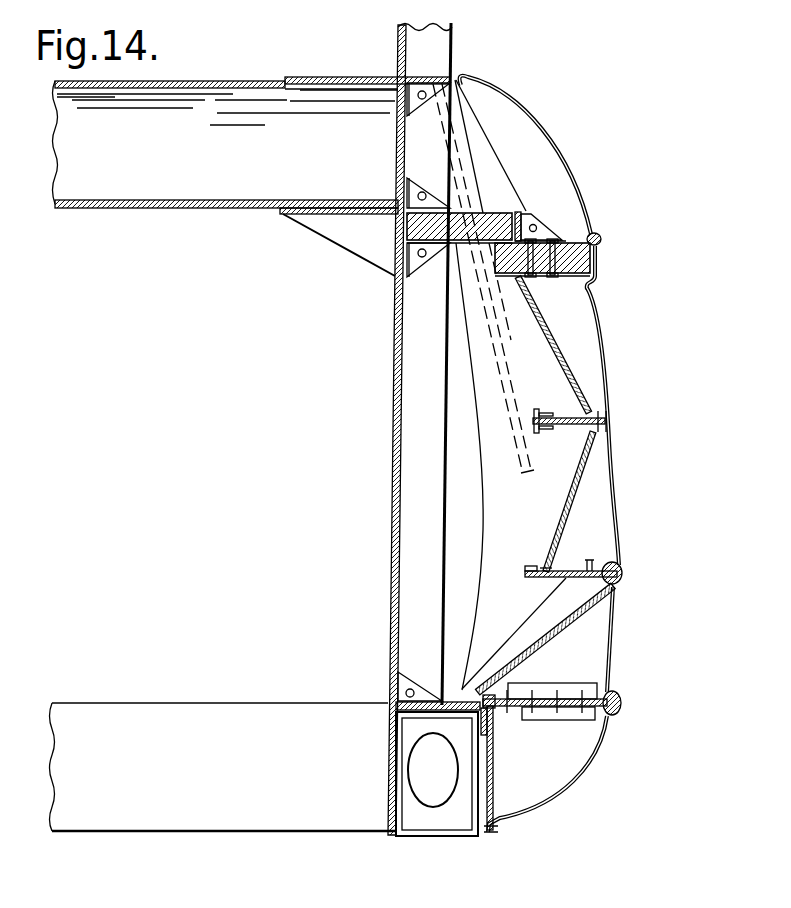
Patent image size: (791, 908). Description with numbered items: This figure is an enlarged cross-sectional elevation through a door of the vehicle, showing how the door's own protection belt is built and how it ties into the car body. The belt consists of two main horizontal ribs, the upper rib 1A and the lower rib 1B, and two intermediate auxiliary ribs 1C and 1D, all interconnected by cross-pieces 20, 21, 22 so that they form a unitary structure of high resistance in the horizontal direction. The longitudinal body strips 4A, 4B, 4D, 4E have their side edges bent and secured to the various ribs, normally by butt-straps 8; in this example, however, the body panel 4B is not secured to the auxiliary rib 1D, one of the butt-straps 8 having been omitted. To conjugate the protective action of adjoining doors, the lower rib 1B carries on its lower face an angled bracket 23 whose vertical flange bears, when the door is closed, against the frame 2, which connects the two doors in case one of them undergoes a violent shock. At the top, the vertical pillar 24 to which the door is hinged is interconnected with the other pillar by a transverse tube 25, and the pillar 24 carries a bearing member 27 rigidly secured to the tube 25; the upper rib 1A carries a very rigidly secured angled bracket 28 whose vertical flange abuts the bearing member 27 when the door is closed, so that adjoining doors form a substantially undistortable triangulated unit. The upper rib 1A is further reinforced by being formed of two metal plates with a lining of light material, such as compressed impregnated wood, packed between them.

The transverse tube 25 is at (227, 145).
The vertical pillar 24 is at (410, 478).
The bearing member 27 is at (523, 212).
The angled bracket 28 is at (553, 233).
The upper main protection rib 1A is at (595, 254).
The butt-strap 8 is at (596, 236).
The longitudinal strip 4A is at (510, 97).
The longitudinal strip 4B is at (602, 329).
The longitudinal strip 4D is at (612, 633).
The longitudinal strip 4E is at (550, 794).
The cross-piece 20 is at (576, 380).
The cross-piece 21 is at (570, 488).
The cross-piece 22 is at (545, 613).
The intermediate auxiliary protection rib 1D is at (562, 418).
The intermediate auxiliary protection rib 1C is at (550, 572).
The lower main protection rib 1B is at (573, 708).
The angled bracket 23 is at (493, 729).
The frame 2 is at (472, 787).